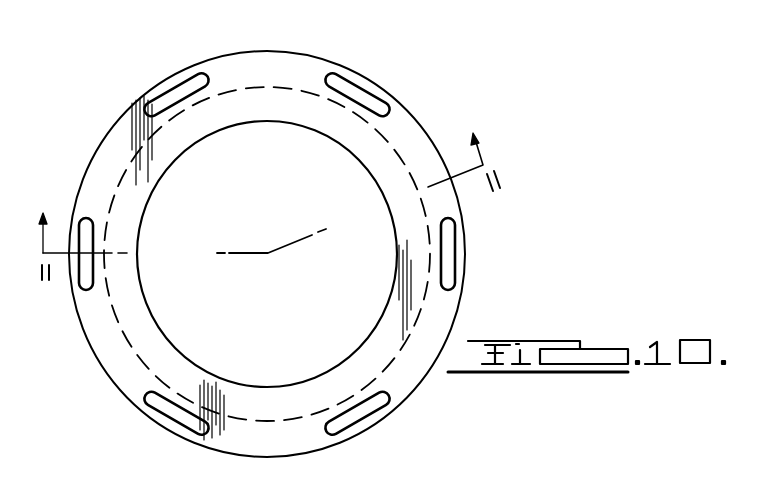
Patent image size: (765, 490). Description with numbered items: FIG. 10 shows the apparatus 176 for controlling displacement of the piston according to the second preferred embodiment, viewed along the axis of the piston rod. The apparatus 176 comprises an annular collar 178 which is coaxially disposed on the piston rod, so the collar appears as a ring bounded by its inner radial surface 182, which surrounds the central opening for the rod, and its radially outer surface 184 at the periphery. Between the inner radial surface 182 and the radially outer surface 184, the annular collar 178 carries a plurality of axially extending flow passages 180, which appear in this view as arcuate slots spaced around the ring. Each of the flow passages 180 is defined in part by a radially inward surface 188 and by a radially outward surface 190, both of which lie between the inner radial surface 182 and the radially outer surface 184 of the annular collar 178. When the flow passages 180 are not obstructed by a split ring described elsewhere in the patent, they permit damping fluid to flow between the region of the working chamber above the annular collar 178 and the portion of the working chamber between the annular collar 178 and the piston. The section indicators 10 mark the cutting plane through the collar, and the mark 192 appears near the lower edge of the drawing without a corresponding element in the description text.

The annular plate assembly 176 is at (423, 77).
The annular flange body 178 is at (241, 437).
The arcuate slots 180 is at (165, 405).
The central circular opening 182 is at (165, 337).
The outer circumferential edge 184 is at (88, 343).
The arcuate slot 188 is at (190, 90).
The slot end region 190 is at (150, 97).
The plate surface 192 is at (440, 480).
The section line 10- 10 is at (263, 191).